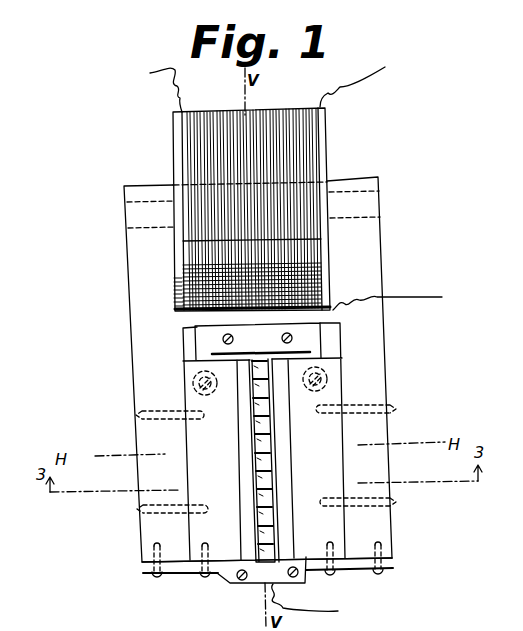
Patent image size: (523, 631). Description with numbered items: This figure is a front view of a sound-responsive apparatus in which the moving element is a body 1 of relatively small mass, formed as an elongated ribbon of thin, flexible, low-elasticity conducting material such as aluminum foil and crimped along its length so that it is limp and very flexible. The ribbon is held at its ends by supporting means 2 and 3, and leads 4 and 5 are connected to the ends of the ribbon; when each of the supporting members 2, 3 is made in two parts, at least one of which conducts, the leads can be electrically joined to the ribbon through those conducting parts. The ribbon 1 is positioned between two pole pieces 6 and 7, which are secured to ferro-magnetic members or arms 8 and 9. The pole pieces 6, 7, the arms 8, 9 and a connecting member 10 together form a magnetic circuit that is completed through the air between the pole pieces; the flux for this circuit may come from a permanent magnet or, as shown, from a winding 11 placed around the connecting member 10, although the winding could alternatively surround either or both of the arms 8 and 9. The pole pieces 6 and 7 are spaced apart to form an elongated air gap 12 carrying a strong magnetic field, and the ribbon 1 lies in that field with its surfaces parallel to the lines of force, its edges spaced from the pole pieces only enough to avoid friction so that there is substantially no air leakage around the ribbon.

The body 1 is at (258, 553).
The supporting means 2 is at (287, 584).
The supporting means 3 is at (236, 332).
The lead 4 is at (340, 612).
The lead 5 is at (428, 298).
The pole piece 6 is at (330, 522).
The pole piece 7 is at (200, 528).
The ferro-magnetic member 8 is at (378, 260).
The ferro-magnetic member 9 is at (132, 266).
The connecting member 10 is at (205, 184).
The winding 11 is at (193, 112).
The air gap 12 is at (247, 455).